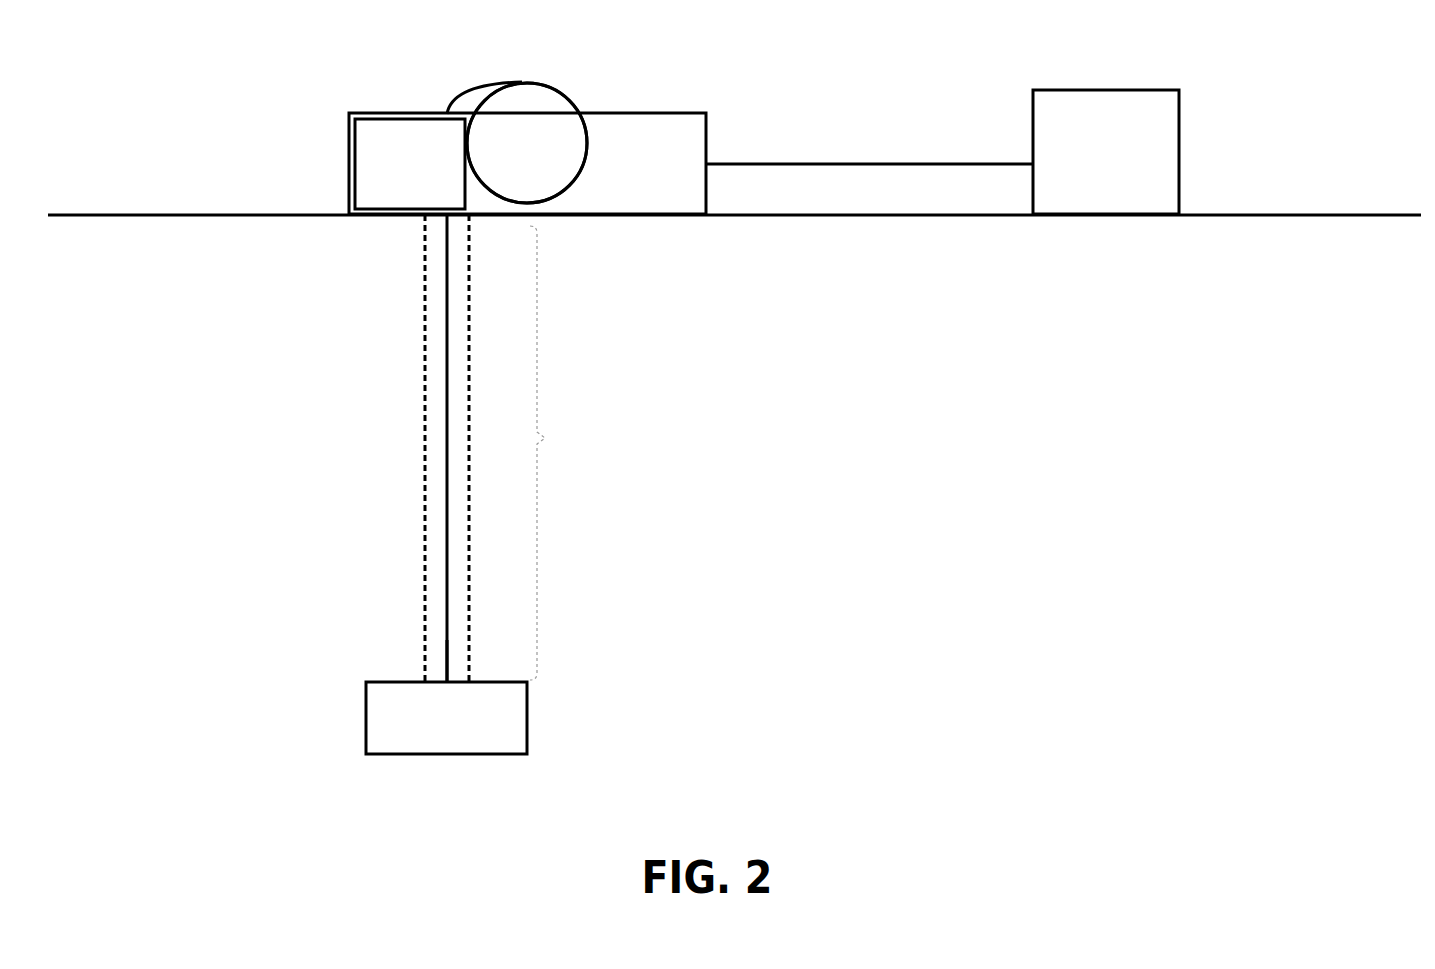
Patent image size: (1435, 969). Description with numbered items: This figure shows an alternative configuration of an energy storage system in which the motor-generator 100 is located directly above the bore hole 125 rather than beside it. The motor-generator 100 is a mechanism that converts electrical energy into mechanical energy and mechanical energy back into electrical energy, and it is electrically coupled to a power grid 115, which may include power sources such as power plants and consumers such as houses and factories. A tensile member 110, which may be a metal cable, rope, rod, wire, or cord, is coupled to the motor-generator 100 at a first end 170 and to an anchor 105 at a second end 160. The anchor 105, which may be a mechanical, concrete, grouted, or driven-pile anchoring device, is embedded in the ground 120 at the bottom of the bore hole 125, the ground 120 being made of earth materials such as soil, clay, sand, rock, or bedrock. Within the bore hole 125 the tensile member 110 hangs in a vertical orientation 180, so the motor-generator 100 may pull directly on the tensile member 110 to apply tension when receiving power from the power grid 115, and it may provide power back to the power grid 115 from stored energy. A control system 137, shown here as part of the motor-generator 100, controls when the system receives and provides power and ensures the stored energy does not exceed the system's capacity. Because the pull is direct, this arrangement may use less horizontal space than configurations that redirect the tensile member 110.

The motor-generator 100 is at (620, 205).
The anchor 105 is at (426, 745).
The tensile member 110 is at (487, 76).
The power grid 115 is at (1085, 180).
The ground 120 is at (789, 418).
The bore hole 125 is at (423, 455).
The control system 137 is at (393, 200).
The second end 160 is at (441, 677).
The first end 170 is at (540, 78).
The vertical orientation 180 is at (563, 453).